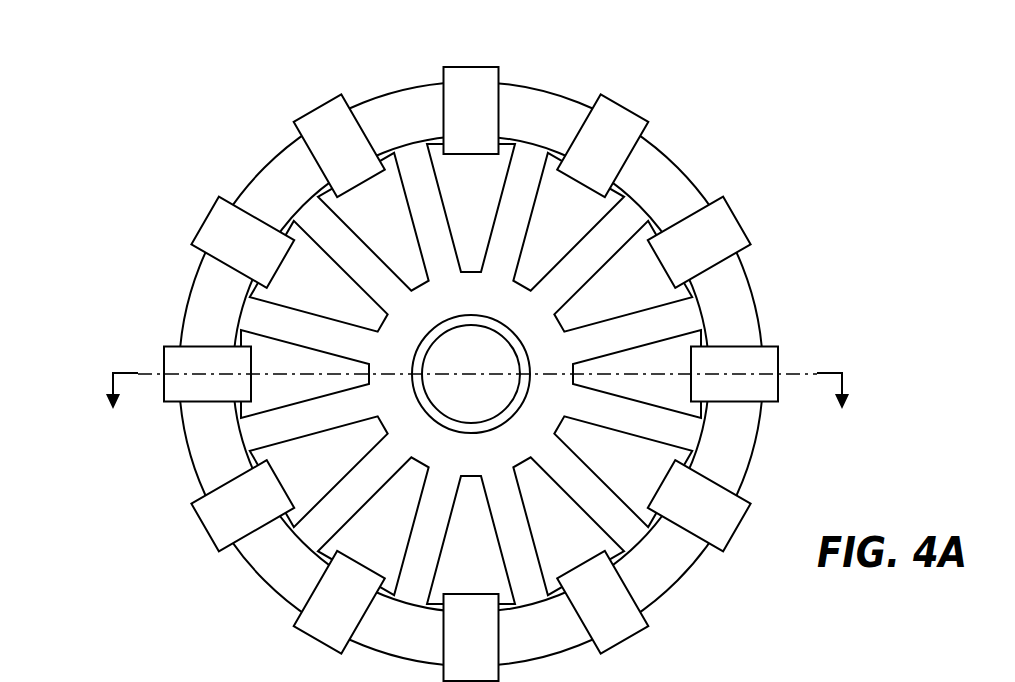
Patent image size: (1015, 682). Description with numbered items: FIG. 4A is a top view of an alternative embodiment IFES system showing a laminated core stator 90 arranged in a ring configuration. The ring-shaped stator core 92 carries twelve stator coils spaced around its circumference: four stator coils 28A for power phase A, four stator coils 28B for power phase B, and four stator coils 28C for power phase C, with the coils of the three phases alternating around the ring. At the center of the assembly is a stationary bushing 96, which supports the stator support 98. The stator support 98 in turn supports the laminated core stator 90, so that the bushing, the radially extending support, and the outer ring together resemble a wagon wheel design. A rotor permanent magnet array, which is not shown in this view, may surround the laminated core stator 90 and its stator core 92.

The laminated core stator 90 is at (158, 178).
The stator core 92 is at (549, 87).
The stator support 98 is at (602, 243).
The stationary bushing 96 is at (530, 363).
The stator coils 28A is at (461, 77).
The stator coils 28B is at (617, 118).
The stator coils 28C is at (330, 112).